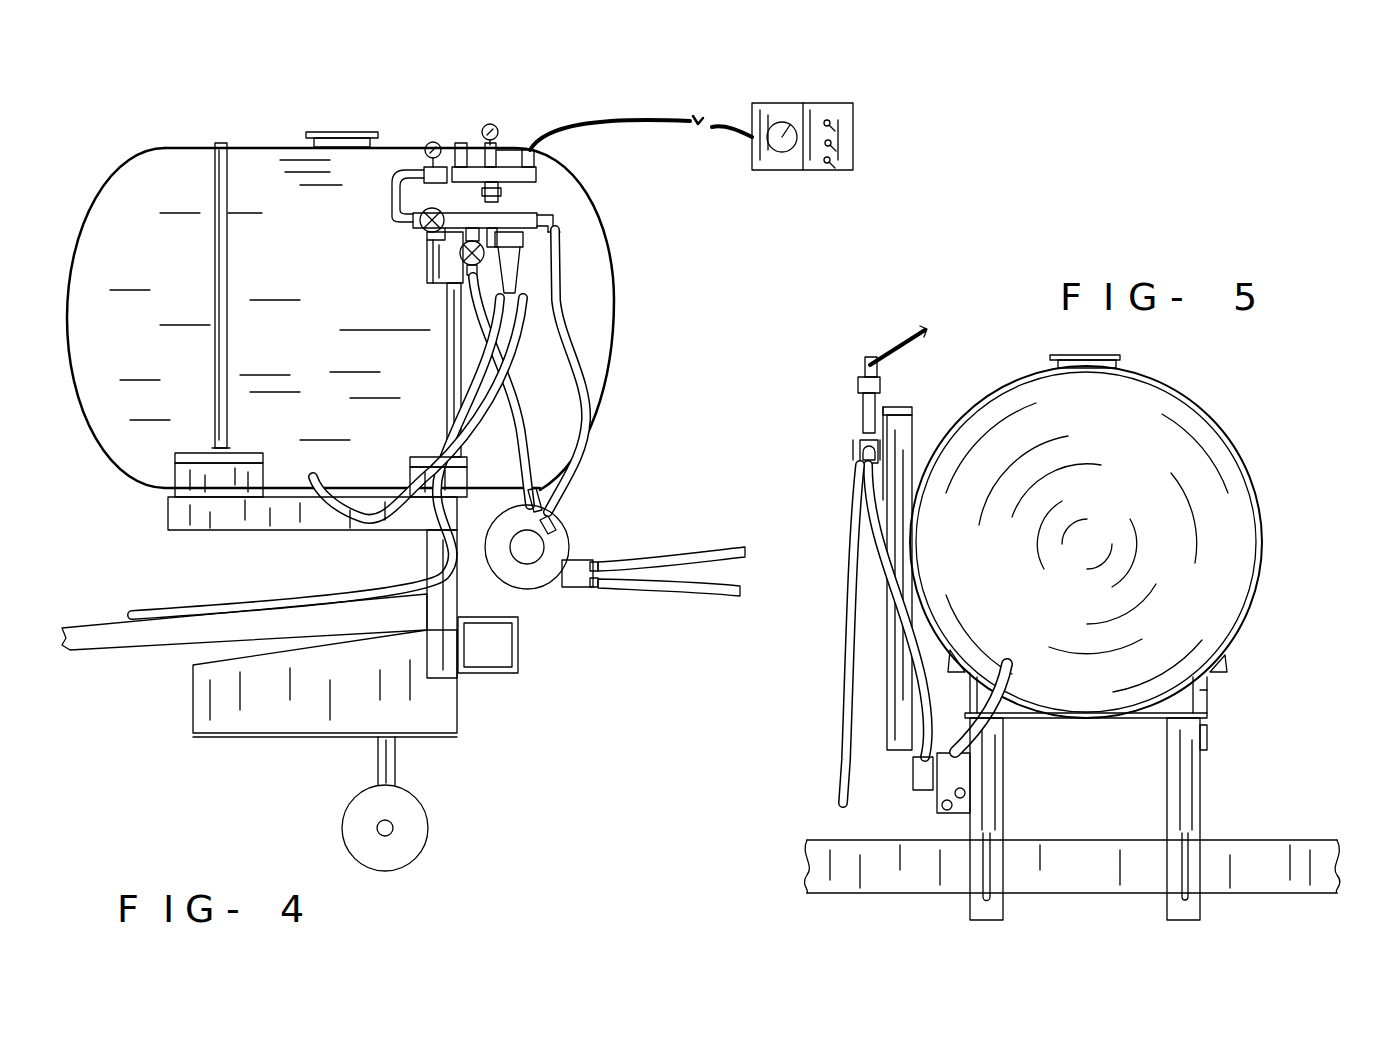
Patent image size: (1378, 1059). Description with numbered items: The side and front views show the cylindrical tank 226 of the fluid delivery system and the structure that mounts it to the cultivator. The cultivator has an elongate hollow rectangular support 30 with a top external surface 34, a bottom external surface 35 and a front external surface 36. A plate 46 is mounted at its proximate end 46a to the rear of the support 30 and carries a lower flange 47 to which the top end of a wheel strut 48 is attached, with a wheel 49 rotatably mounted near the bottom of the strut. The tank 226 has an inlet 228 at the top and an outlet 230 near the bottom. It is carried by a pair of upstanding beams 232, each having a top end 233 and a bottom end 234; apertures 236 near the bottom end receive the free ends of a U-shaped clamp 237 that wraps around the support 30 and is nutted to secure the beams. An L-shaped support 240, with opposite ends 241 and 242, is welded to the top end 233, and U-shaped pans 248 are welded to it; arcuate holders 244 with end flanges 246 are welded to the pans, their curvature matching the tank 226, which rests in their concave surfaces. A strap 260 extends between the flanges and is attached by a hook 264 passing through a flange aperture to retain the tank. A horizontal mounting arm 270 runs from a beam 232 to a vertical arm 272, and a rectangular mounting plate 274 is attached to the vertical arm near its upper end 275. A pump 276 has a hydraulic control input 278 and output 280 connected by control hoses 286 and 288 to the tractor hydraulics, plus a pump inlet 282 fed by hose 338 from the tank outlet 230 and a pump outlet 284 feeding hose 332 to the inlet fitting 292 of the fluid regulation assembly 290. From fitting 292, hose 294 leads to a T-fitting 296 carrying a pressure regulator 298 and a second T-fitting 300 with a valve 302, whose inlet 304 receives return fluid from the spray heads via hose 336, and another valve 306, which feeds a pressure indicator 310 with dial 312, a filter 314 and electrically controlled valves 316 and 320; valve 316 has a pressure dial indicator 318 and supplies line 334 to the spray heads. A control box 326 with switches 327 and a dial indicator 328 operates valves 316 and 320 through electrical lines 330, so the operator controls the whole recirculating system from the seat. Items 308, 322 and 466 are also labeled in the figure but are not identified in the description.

In FIG. 4, the elongate hollow rectangular support 30 is at (522, 649).
In FIG. 5, the elongate hollow rectangular support 30 is at (1088, 872).
In FIG. 5, the top external surface 34 is at (1312, 840).
In FIG. 5, the bottom external surface 35 is at (1280, 895).
In FIG. 5, the front external surface 36 is at (822, 860).
In FIG. 4, the plate 46 is at (430, 738).
In FIG. 4, the proximate end 46a is at (460, 738).
In FIG. 4, the lower flange 47 is at (286, 737).
In FIG. 4, the wheel strut 48 is at (396, 760).
In FIG. 4, the wheel 49 is at (430, 835).
In FIG. 4, the tank 226 is at (265, 158).
In FIG. 5, the tank 226 is at (1150, 440).
In FIG. 4, the inlet 228 is at (355, 132).
In FIG. 5, the inlet 228 is at (1120, 358).
In FIG. 5, the outlet 230 is at (1000, 655).
In FIG. 4, the upstanding beams 232 is at (462, 675).
In FIG. 5, the upstanding beams 232 is at (990, 782).
In FIG. 5, the top end 233 is at (1003, 718).
In FIG. 5, the bottom end 234 is at (980, 922).
In FIG. 5, the apertures 236 is at (975, 898).
In FIG. 5, the U-shaped clamp 237 is at (991, 868).
In FIG. 4, the L-shaped support 240 is at (306, 518).
In FIG. 4, the end of L-shaped support 241 is at (552, 520).
In FIG. 5, the end of L-shaped support 241 is at (1208, 740).
In FIG. 4, the end of L-shaped support 242 is at (170, 518).
In FIG. 4, the arcuate holder 244 is at (186, 481).
In FIG. 5, the arcuate holder 244 is at (1194, 685).
In FIG. 4, the flange 246 is at (190, 455).
In FIG. 5, the flange 246 is at (968, 640).
In FIG. 5, the U-shaped pan 248 is at (1198, 700).
In FIG. 4, the strap 260 is at (220, 247).
In FIG. 5, the strap 260 is at (1264, 500).
In FIG. 5, the hook 264 is at (956, 648).
In FIG. 5, the mounting arm 270 is at (907, 757).
In FIG. 4, the vertically disposed arm 272 is at (462, 395).
In FIG. 5, the vertically disposed arm 272 is at (900, 705).
In FIG. 4, the mounting plate 274 is at (440, 262).
In FIG. 5, the mounting plate 274 is at (912, 422).
In FIG. 5, the upper end 275 is at (895, 410).
In FIG. 4, the pump 276 is at (562, 540).
In FIG. 5, the pump 276 is at (966, 800).
In FIG. 4, the hydraulic control input 278 is at (598, 565).
In FIG. 4, the hydraulic control output 280 is at (596, 586).
In FIG. 4, the pump inlet 282 is at (546, 492).
In FIG. 5, the pump inlet 282 is at (955, 757).
In FIG. 4, the pump outlet 284 is at (520, 590).
In FIG. 4, the control hose 286 is at (730, 550).
In FIG. 4, the control hose 288 is at (733, 590).
In FIG. 4, the fluid regulation assembly 290 is at (570, 213).
In FIG. 4, the inlet fitting 292 is at (556, 230).
In FIG. 4, the hose 294 is at (530, 214).
In FIG. 4, the T-fitting 296 is at (530, 196).
In FIG. 4, the pressure regulator 298 is at (520, 264).
In FIG. 4, the T-fitting 300 is at (430, 256).
In FIG. 4, the valve 302 is at (462, 276).
In FIG. 4, the inlet 304 is at (456, 310).
In FIG. 4, the valve 306 is at (428, 236).
In FIG. 4, the elbow pipe 308 is at (415, 188).
In FIG. 4, the pressure indicator 310 is at (424, 174).
In FIG. 4, the dial 312 is at (430, 143).
In FIG. 4, the filter 314 is at (461, 150).
In FIG. 4, the electrically controlled valve 316 is at (480, 142).
In FIG. 4, the pressure dial indicator 318 is at (500, 142).
In FIG. 4, the electrically controlled valve 320 is at (540, 160).
In FIG. 5, the electrically controlled valve 320 is at (858, 385).
In FIG. 4, the valve 322 is at (420, 222).
In FIG. 4, the control box 326 is at (848, 147).
In FIG. 4, the switches 327 is at (832, 126).
In FIG. 4, the dial indicator 328 is at (770, 130).
In FIG. 4, the electrical lines 330 is at (655, 117).
In FIG. 5, the electrical lines 330 is at (900, 345).
In FIG. 4, the hose 332 is at (562, 335).
In FIG. 5, the hose 332 is at (893, 603).
In FIG. 4, the line 334 is at (522, 395).
In FIG. 4, the hose 336 is at (493, 443).
In FIG. 5, the hose 336 is at (858, 757).
In FIG. 5, the hose 338 is at (1010, 662).
In FIG. 4, the housing 466 is at (193, 690).